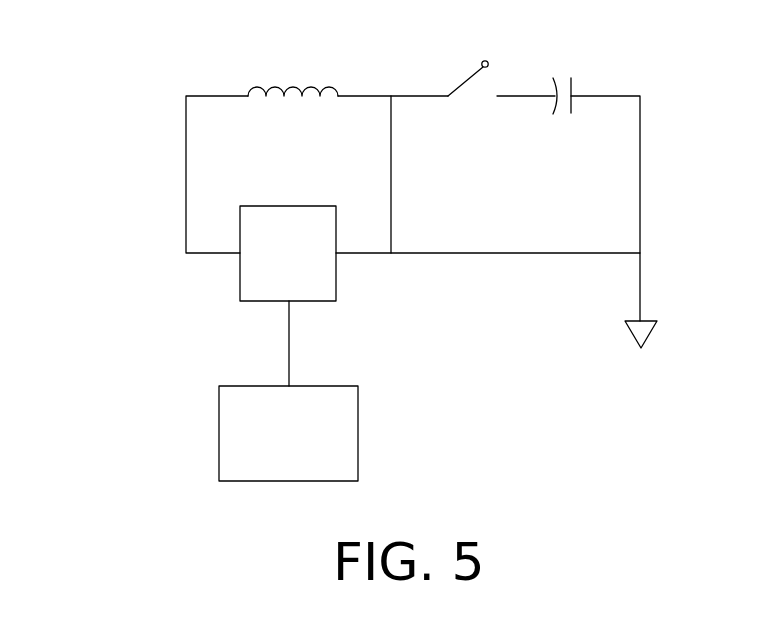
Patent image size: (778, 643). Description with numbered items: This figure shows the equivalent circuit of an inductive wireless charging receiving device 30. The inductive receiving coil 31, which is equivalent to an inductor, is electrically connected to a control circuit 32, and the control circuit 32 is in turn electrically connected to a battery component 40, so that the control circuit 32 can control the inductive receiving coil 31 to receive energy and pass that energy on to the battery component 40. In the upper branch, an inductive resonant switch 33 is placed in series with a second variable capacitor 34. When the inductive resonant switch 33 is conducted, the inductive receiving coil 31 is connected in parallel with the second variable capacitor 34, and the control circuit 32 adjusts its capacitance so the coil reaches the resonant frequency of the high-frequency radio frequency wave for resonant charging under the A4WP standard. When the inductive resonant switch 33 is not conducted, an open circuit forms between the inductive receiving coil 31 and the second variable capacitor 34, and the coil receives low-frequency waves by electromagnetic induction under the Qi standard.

The inductive wireless charging receiving device 30 is at (74, 44).
The inductive receiving coil 31 is at (295, 83).
The control circuit 32 is at (240, 278).
The inductive resonant switch 33 is at (465, 73).
The second variable capacitor 34 is at (565, 76).
The battery component 40 is at (219, 437).